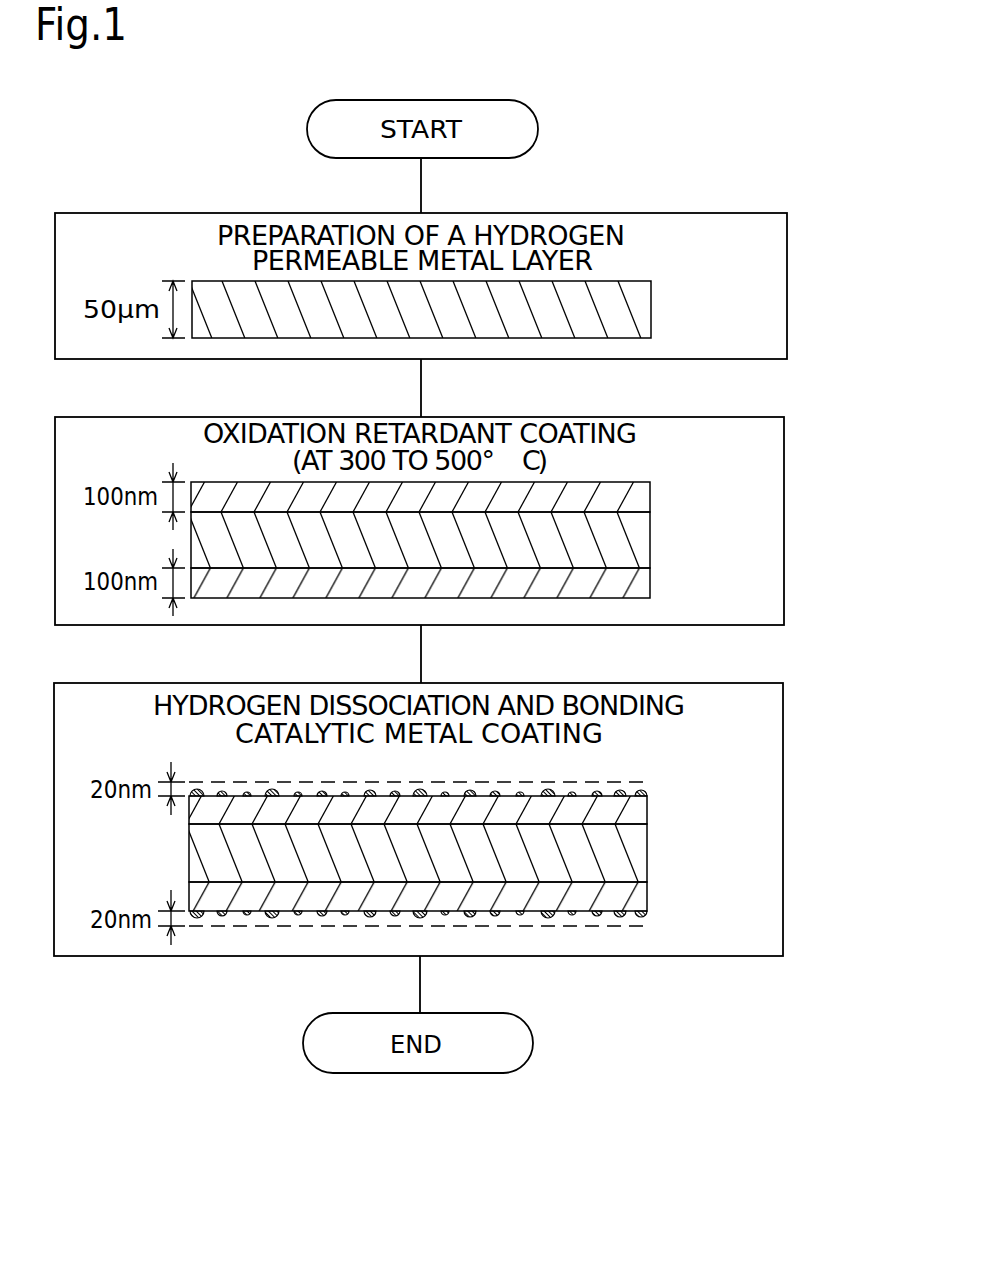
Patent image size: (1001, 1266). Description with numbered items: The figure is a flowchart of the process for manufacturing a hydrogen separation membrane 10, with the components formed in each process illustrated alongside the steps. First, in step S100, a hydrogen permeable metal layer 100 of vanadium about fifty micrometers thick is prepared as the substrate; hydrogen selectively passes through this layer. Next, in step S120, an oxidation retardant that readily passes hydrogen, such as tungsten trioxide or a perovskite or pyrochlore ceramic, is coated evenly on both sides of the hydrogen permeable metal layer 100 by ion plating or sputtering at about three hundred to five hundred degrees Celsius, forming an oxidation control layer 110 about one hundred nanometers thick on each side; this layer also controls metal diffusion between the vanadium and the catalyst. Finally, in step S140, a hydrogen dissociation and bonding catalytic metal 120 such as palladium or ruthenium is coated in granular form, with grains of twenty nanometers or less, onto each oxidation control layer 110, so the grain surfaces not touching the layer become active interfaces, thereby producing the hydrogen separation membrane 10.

The hydrogen separation membrane 10 is at (688, 758).
The hydrogen permeable metal layer 100 is at (651, 310).
The oxidation control layer 110 is at (650, 498).
The hydrogen dissociation and bonding catalytic metal 120 is at (647, 796).
The step of preparing the hydrogen permeable metal layer S100 is at (787, 290).
The oxidation retardant coating step S120 is at (784, 522).
The catalytic metal coating step S140 is at (783, 805).